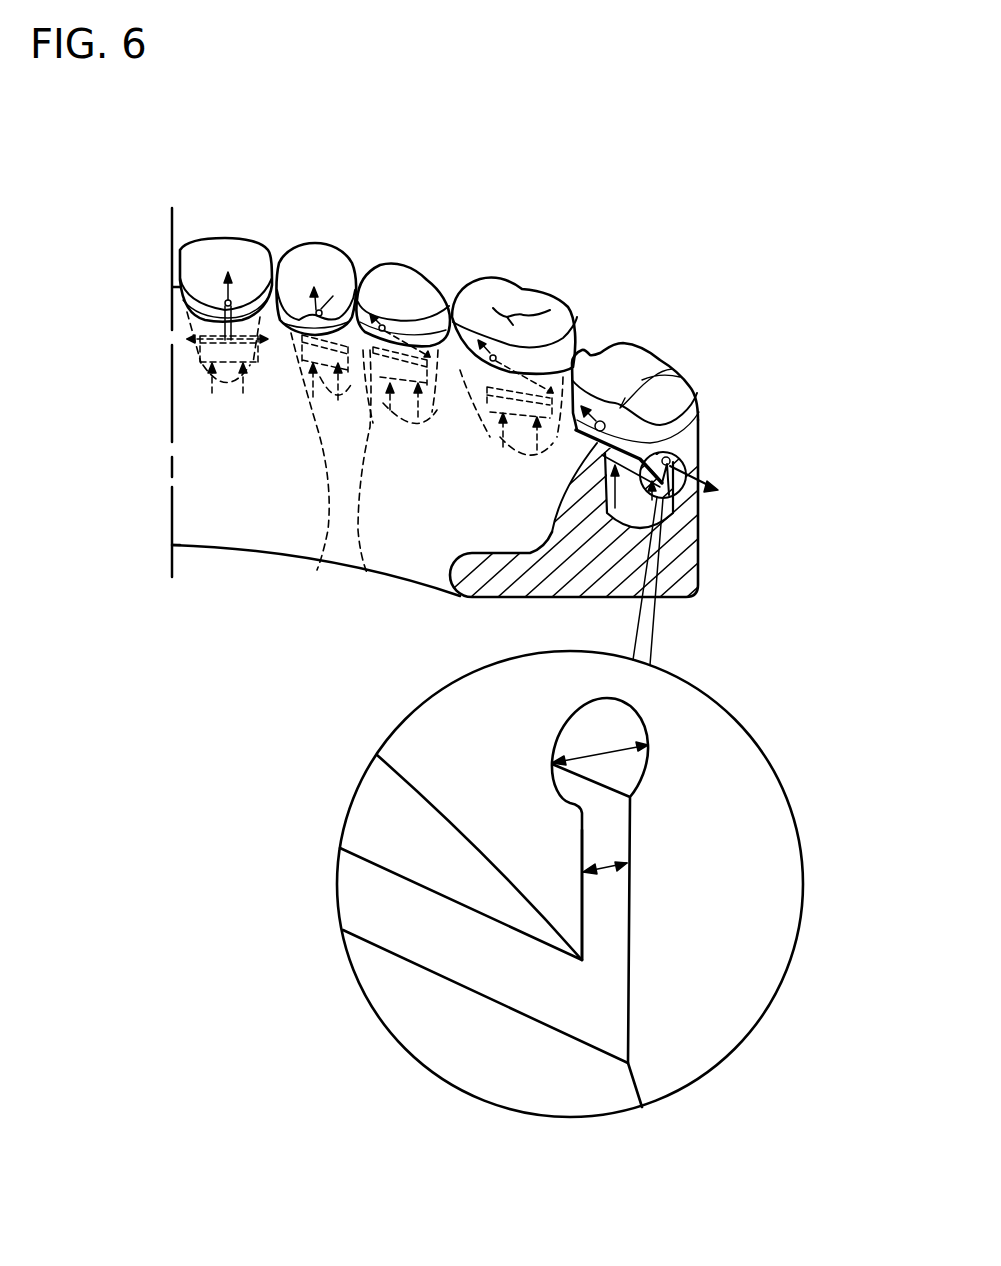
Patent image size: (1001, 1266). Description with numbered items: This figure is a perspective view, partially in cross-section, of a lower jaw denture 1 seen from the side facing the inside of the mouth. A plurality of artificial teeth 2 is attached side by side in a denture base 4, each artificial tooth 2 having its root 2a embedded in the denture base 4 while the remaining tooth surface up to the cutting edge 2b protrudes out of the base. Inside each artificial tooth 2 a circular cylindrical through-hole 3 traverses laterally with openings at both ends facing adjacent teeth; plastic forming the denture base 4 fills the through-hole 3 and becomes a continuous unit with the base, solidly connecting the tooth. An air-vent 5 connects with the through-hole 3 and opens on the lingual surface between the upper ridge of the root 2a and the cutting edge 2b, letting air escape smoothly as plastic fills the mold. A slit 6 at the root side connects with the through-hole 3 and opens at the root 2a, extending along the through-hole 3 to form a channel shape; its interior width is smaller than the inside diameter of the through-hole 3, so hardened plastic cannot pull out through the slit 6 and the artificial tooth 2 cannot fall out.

The denture 1 is at (573, 213).
The artificial tooth 2 is at (316, 273).
The root 2a is at (343, 356).
The cutting edge 2b is at (295, 248).
The through-hole 3 is at (683, 460).
The denture base 4 is at (680, 553).
The air-vent 5 is at (321, 311).
The slit 6 is at (733, 912).